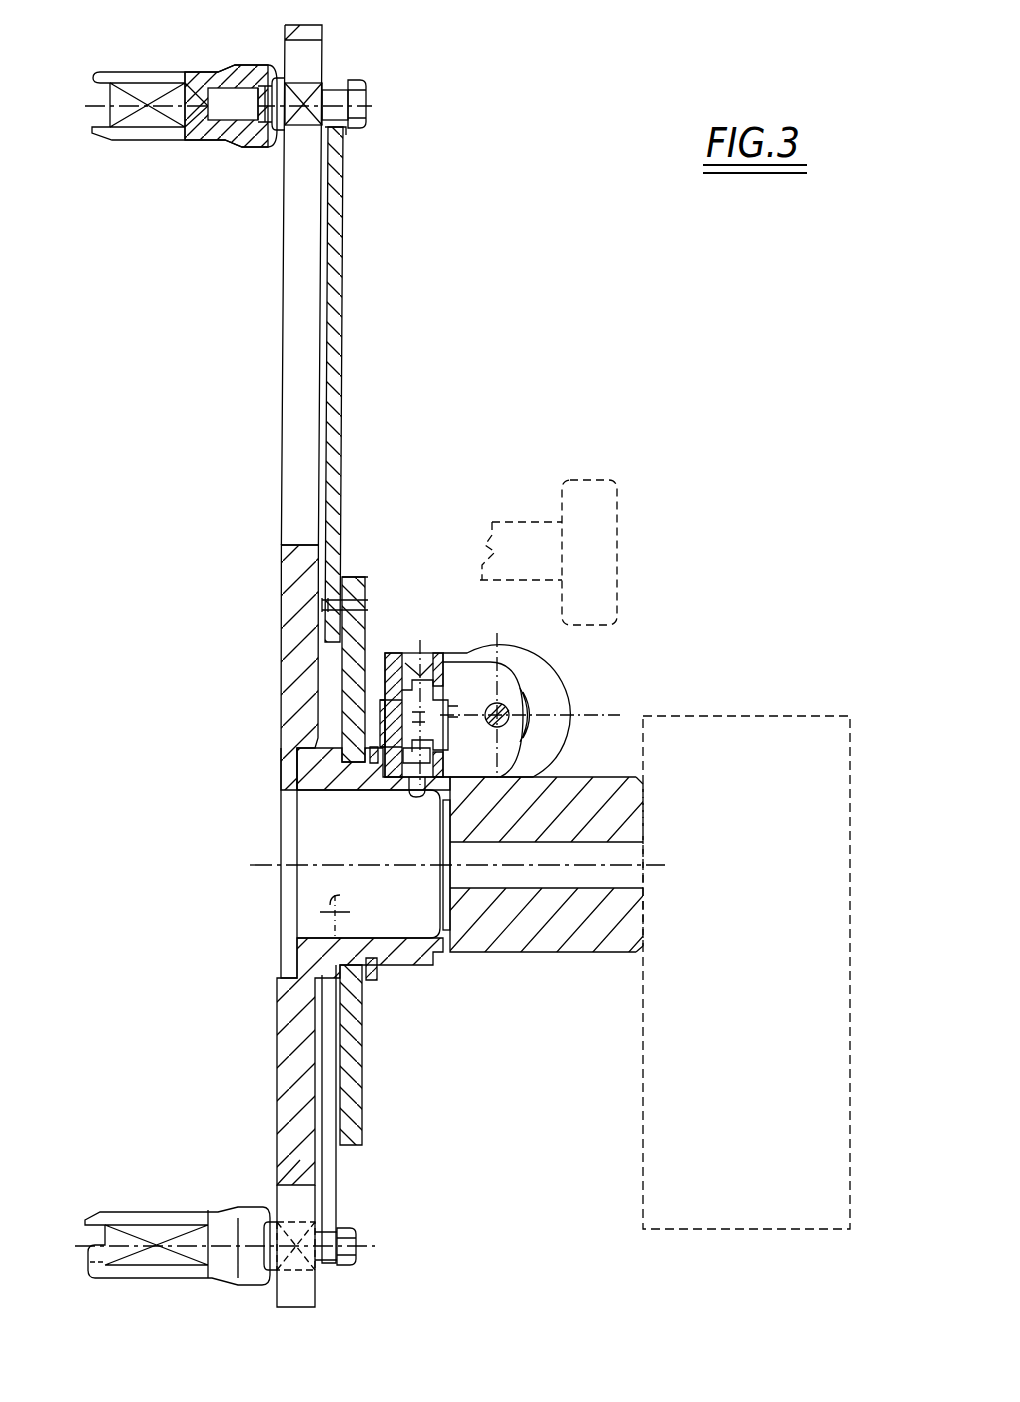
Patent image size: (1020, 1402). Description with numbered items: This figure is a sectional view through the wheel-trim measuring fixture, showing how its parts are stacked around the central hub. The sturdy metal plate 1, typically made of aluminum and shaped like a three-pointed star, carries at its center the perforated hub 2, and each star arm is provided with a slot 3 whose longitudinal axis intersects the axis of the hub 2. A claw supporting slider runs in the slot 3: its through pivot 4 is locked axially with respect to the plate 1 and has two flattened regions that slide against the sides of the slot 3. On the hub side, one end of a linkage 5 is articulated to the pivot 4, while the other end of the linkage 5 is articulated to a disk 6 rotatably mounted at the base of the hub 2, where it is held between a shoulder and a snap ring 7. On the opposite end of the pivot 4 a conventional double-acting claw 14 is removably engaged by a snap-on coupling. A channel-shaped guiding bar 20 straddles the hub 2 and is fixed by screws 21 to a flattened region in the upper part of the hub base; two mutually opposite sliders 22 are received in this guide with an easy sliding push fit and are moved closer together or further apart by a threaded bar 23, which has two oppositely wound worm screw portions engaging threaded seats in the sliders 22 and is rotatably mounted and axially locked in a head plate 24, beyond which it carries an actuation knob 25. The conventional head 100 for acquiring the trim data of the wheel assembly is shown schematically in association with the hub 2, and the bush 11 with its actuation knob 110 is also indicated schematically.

The metal plate 1 is at (282, 607).
The perforated hub 2 is at (553, 940).
The slot 3 is at (287, 545).
The through pivot 4 is at (312, 78).
The linkage 5 is at (345, 345).
The disk 6 is at (365, 1115).
The snap ring 7 is at (372, 980).
The bush 11 is at (517, 522).
The claw 14 is at (158, 137).
The guiding bar 20 is at (398, 653).
The screws 21 is at (410, 800).
The sliders 22 is at (440, 680).
The threaded bar 23 is at (505, 705).
The head plate 24 is at (510, 752).
The actuation knob 25 is at (560, 700).
The head for acquiring trim data 100 is at (822, 716).
The actuation knob 110 is at (596, 470).